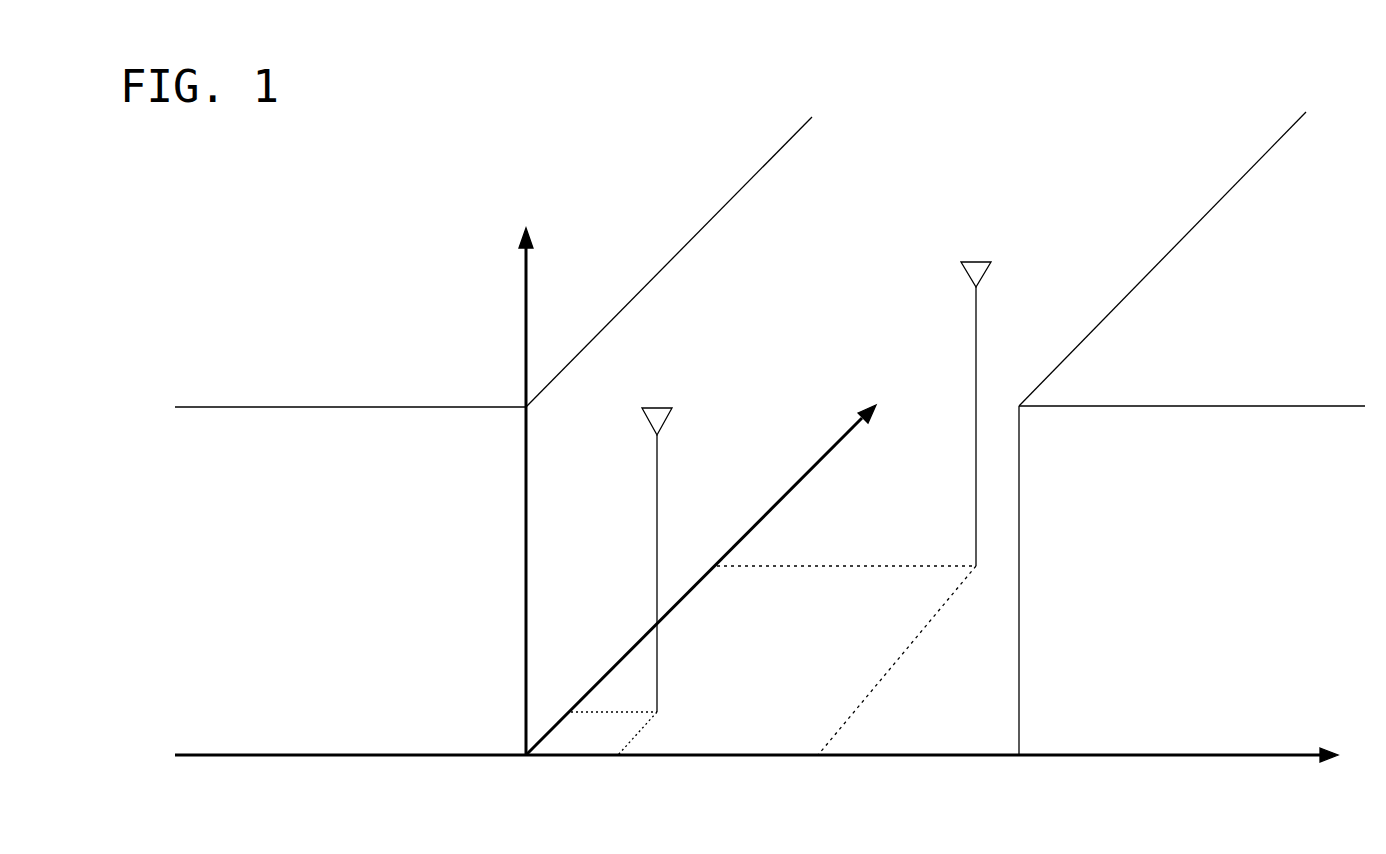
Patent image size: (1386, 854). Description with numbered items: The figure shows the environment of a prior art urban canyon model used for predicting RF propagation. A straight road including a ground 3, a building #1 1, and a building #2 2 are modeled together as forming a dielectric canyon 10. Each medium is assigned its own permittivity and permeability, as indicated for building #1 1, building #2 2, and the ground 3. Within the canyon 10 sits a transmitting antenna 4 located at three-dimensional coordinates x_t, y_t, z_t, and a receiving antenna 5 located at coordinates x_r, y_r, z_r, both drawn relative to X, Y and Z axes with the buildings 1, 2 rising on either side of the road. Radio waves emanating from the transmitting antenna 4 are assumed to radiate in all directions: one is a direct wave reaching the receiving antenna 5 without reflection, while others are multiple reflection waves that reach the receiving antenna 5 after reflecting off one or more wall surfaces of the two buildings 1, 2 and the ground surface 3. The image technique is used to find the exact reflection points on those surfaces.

The building # 1 is at (364, 540).
The building # 2 is at (1219, 540).
The ground 3 is at (790, 838).
The transmitting antenna 4 is at (691, 346).
The receiving antenna 5 is at (989, 191).
The dielectric canyon 10 is at (1190, 58).